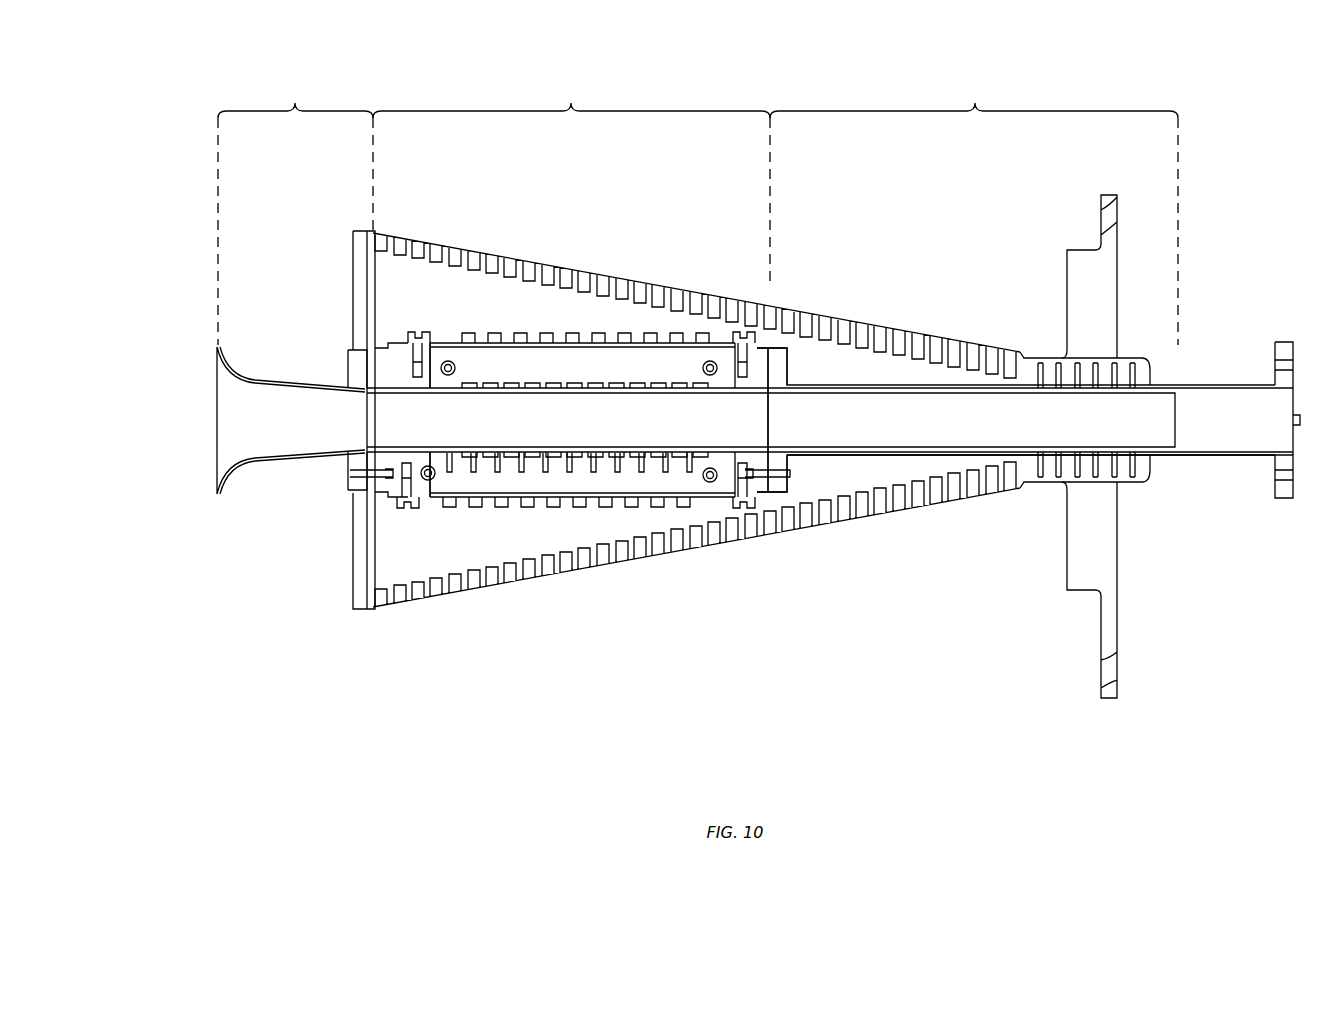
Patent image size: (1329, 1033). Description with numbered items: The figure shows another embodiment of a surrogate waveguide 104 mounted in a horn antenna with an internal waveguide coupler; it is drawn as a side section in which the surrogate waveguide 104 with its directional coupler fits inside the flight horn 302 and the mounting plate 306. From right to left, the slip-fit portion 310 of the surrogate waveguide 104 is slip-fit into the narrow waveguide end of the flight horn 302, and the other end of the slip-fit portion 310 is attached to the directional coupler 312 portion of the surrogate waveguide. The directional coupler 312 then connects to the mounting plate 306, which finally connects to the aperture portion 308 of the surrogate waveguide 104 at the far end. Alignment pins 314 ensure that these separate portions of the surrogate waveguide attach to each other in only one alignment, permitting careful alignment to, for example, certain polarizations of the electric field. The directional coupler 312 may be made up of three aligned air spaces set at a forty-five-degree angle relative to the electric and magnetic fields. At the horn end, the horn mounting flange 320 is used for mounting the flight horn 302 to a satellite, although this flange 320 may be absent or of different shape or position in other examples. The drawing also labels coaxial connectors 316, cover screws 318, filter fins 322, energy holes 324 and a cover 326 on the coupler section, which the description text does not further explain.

The surrogate waveguide 104 is at (300, 425).
The flight horn 302 is at (980, 703).
The mounting plate 306 is at (439, 705).
The aperture portion 308 is at (306, 56).
The slip-fit portion 310 is at (984, 56).
The directional coupler 312 is at (584, 56).
The alignment pins 314 is at (362, 482).
The coaxial connectors 316 is at (448, 148).
The cover screws 318 is at (559, 145).
The horn mounting flange 320 is at (1280, 694).
The filter fins 322 is at (564, 659).
The energy holes 324 is at (626, 219).
The cover 326 is at (490, 227).